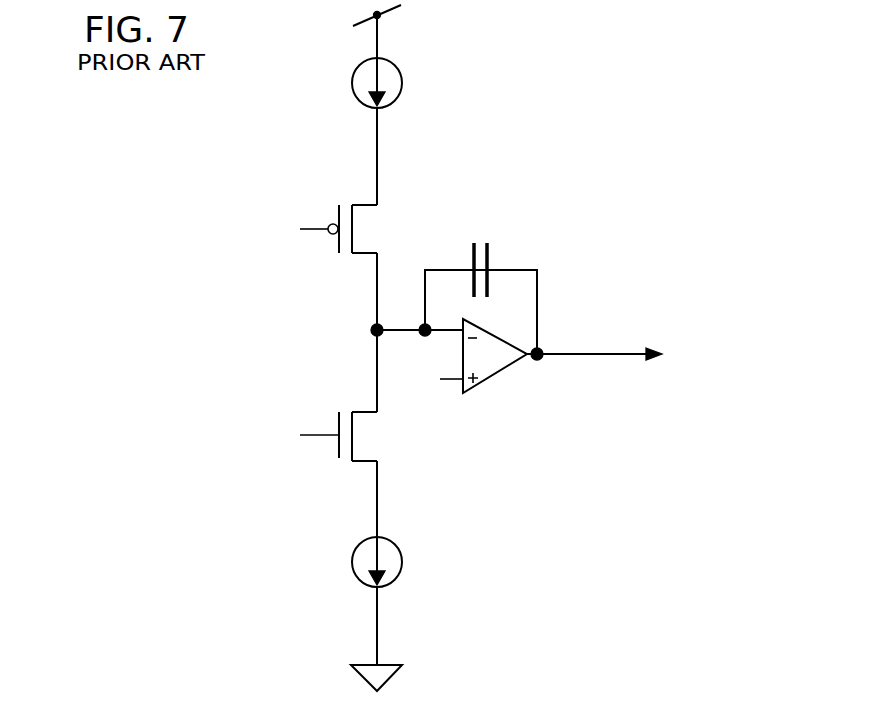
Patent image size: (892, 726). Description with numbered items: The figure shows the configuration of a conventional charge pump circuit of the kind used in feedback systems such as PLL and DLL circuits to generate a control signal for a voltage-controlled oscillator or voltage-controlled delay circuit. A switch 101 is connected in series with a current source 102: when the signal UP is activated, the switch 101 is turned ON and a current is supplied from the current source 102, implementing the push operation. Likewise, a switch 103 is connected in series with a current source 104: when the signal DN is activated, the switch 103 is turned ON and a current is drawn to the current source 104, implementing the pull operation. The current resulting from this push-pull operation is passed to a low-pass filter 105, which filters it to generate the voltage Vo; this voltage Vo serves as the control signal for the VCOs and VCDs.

The switch 101 is at (359, 205).
The current source 102 is at (352, 83).
The switch 103 is at (359, 412).
The current source 104 is at (352, 563).
The low-pass filter 105 is at (543, 214).